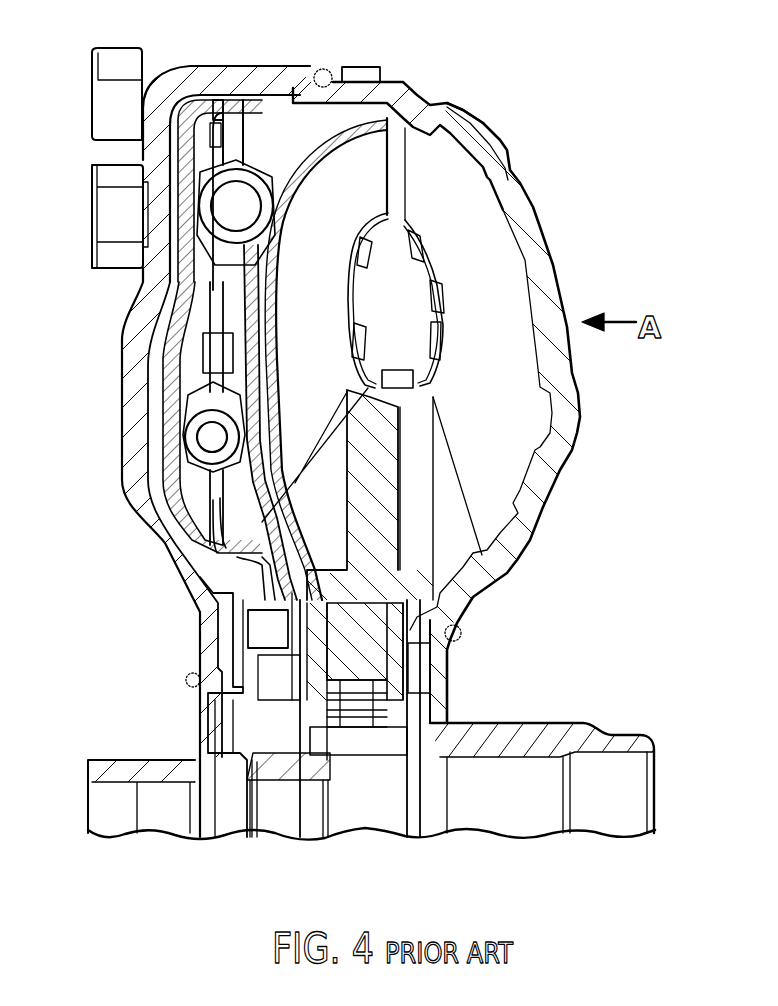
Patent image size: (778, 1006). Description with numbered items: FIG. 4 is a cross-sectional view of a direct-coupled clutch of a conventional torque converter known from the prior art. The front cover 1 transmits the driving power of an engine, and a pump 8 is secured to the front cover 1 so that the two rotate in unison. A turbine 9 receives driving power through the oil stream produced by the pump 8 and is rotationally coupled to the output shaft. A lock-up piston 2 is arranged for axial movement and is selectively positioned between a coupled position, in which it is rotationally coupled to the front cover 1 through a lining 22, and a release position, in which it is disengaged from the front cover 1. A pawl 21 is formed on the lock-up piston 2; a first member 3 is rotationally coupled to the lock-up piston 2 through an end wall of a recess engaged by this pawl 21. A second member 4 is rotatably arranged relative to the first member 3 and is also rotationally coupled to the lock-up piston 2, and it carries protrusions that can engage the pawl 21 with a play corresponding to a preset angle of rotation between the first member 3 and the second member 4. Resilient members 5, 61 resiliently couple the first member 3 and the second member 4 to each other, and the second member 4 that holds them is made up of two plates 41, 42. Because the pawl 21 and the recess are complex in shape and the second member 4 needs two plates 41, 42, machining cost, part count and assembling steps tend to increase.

The front cover 1 is at (195, 76).
The lock-up piston 2 is at (170, 378).
The first member 3 is at (240, 108).
The second member 4 is at (205, 528).
The resilient member 5 is at (262, 224).
The pump 8 is at (538, 224).
The turbine 9 is at (330, 180).
The pawl 21 is at (217, 97).
The lining 22 is at (172, 163).
The plate 41 is at (215, 585).
The plate 42 is at (208, 492).
The resilient member 61 is at (190, 437).